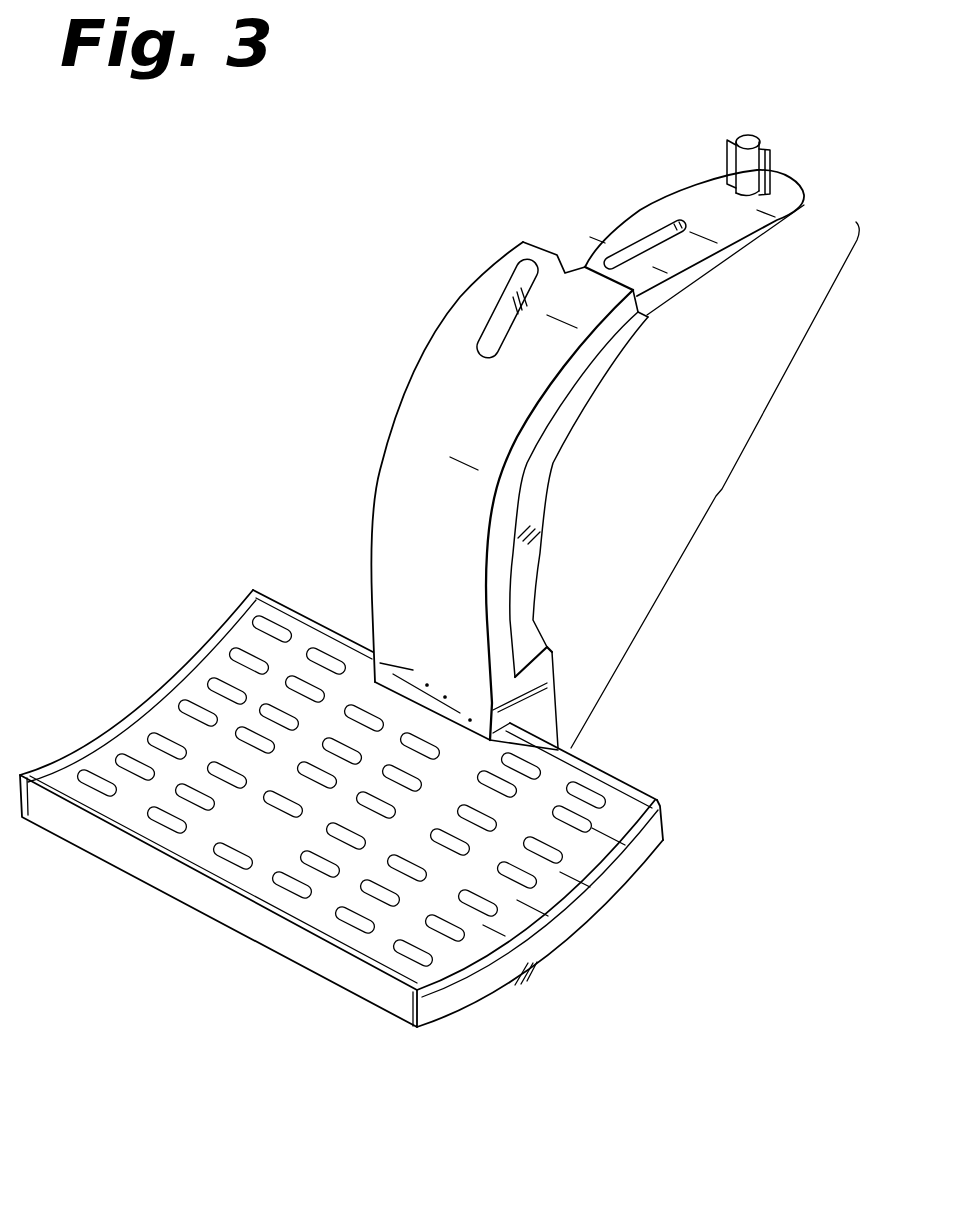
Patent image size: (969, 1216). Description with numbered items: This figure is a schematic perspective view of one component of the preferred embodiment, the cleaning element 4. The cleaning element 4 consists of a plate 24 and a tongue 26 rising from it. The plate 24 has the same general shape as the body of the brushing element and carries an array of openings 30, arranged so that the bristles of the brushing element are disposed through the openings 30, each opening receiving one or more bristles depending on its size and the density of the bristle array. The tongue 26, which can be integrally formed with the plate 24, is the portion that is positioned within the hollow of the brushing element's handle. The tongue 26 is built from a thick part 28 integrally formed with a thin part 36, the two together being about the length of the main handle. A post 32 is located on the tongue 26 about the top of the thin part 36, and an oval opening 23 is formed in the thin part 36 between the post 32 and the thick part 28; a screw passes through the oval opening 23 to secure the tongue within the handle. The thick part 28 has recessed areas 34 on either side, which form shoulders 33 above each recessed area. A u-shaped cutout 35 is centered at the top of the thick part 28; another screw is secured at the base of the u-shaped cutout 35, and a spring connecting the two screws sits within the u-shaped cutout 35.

The cleaning element 4 is at (290, 321).
The oval opening 23 is at (641, 255).
The plate 24 is at (622, 872).
The tongue 26 is at (745, 497).
The thick part 28 is at (371, 498).
The openings 30 is at (590, 800).
The post 32 is at (740, 133).
The shoulders 33 is at (518, 453).
The recessed areas 34 is at (533, 500).
The u-shaped cutout 35 is at (500, 335).
The thin part 36 is at (676, 194).